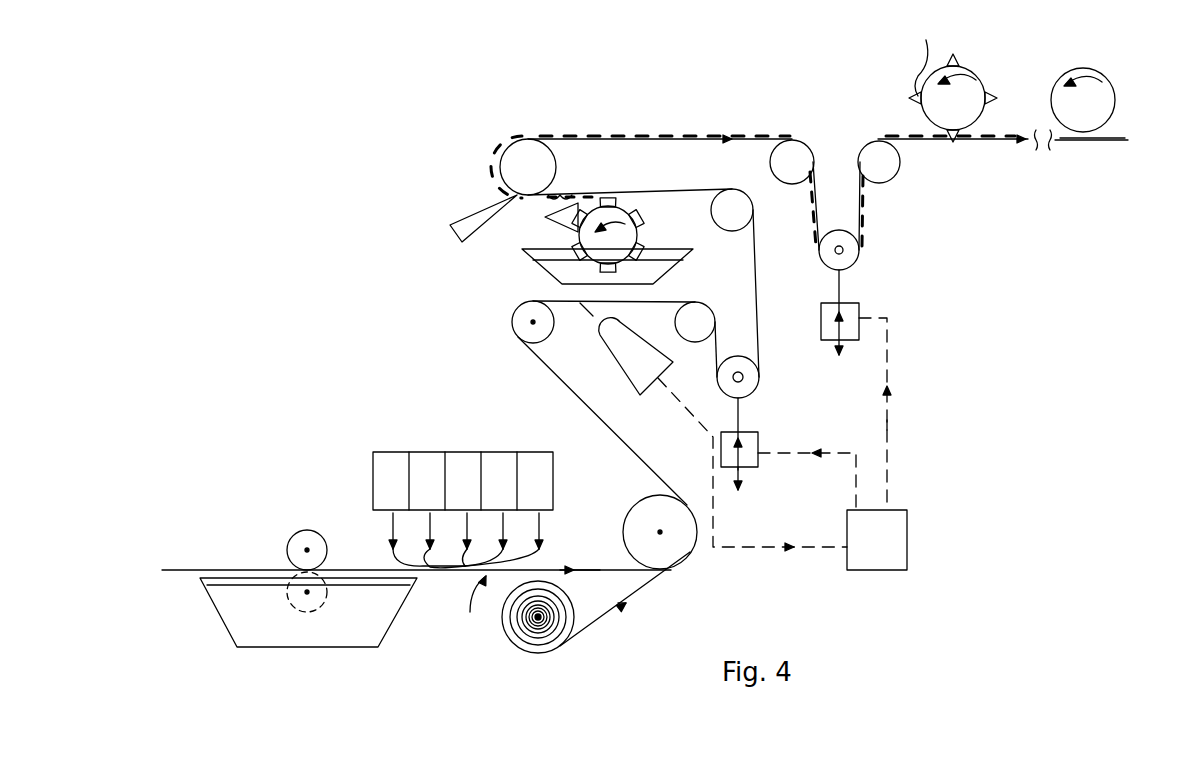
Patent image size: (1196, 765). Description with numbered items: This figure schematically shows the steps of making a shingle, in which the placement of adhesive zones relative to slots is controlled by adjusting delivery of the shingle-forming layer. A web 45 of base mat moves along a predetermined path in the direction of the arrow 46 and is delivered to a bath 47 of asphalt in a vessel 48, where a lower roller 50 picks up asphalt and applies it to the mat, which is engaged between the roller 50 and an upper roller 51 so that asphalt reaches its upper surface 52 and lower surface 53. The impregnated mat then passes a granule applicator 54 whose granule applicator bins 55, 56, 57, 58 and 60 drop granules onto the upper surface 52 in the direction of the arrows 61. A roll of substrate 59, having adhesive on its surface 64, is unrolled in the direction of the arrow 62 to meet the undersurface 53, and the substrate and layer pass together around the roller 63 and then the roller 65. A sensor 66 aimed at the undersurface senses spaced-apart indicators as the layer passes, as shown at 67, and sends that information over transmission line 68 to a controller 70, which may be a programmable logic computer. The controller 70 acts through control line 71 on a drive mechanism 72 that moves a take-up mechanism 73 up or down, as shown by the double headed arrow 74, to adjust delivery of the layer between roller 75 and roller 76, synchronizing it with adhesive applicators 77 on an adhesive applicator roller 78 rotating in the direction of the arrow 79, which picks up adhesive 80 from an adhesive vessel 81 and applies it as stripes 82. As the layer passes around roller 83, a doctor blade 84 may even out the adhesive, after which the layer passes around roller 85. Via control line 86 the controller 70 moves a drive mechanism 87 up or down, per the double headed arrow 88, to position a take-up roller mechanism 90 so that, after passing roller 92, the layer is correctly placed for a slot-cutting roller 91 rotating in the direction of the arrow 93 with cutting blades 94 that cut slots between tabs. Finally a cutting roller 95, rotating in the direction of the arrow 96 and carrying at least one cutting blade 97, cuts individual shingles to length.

The web of base mat 45 is at (200, 568).
The arrow 46 is at (582, 568).
The bath of bitumen material 47 is at (355, 630).
The vessel 48 is at (270, 647).
The lower roller 50 is at (289, 584).
The upper roller 51 is at (302, 531).
The upper surface 52 is at (702, 194).
The lower surface 53 is at (614, 302).
The granule applicator 54 is at (396, 449).
The granule applicator bin 55 is at (393, 500).
The granule applicator bin 56 is at (429, 500).
The granule applicator bin 57 is at (465, 500).
The granule applicator bin 58 is at (501, 500).
The roll of substrate 59 is at (565, 652).
The granule applicator bin 60 is at (534, 508).
The arrows 61 is at (466, 560).
The arrow 62 is at (633, 604).
The roller 63 is at (683, 550).
The adhesive surface 64 is at (616, 611).
The roller 65 is at (522, 330).
The sensor 66 is at (624, 358).
The sensing location 67 is at (590, 320).
The transmission line 68 is at (715, 513).
The controller 70 is at (908, 546).
The control line 71 is at (800, 454).
The drive mechanism 72 is at (748, 438).
The take-up mechanism 73 is at (745, 380).
The double headed arrow 74 is at (741, 468).
The roller 75 is at (698, 318).
The roller 76 is at (740, 210).
The adhesive applicators 77 is at (547, 217).
The adhesive applicator roller 78 is at (630, 240).
The arrow 79 is at (634, 214).
The adhesive 80 is at (533, 247).
The adhesive vessel 81 is at (664, 270).
The adhesive stripes 82 is at (558, 196).
The roller 83 is at (552, 158).
The doctor blade 84 is at (462, 220).
The roller 85 is at (791, 152).
The control line 86 is at (890, 425).
The drive mechanism 87 is at (862, 312).
The double headed arrow 88 is at (870, 336).
The take-up roller mechanism 90 is at (848, 252).
The slot-cutting roller 91 is at (968, 74).
The roller 92 is at (895, 162).
The arrow 93 is at (978, 88).
The cutting blades 94 is at (913, 63).
The cutting roller 95 is at (1072, 78).
The arrow 96 is at (1098, 82).
The cutting blade 97 is at (1086, 138).